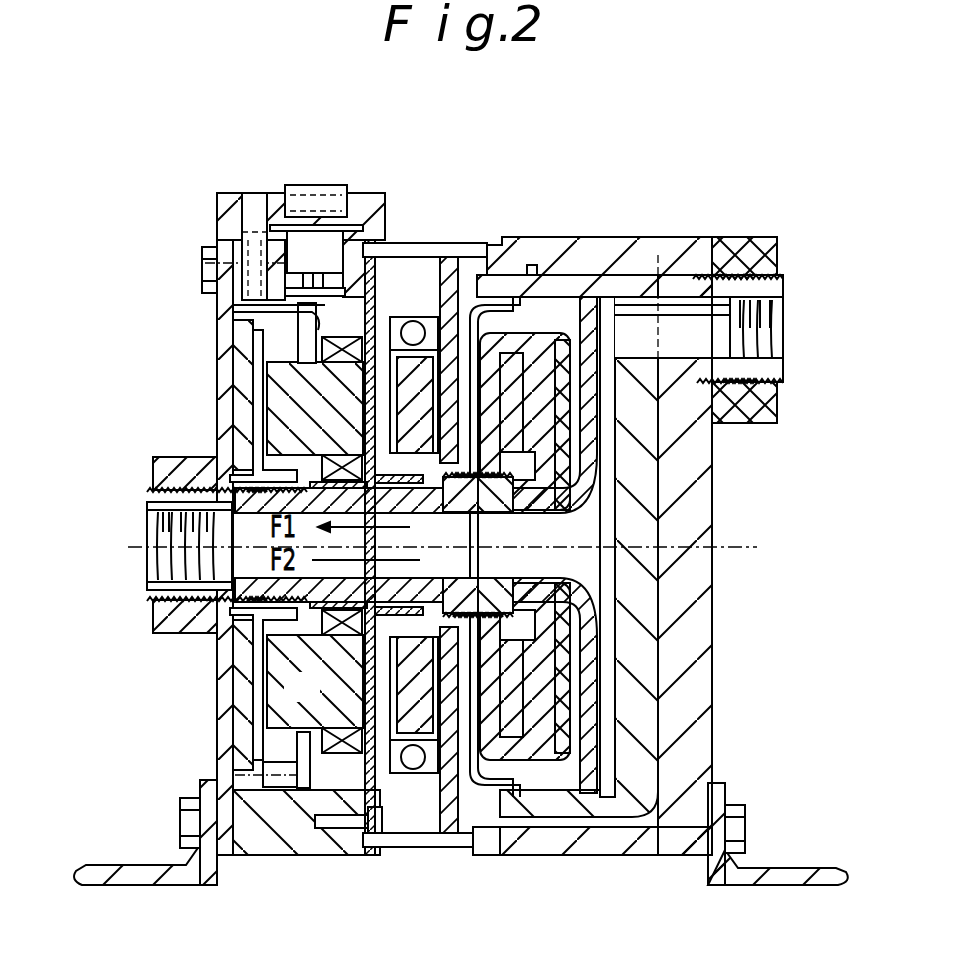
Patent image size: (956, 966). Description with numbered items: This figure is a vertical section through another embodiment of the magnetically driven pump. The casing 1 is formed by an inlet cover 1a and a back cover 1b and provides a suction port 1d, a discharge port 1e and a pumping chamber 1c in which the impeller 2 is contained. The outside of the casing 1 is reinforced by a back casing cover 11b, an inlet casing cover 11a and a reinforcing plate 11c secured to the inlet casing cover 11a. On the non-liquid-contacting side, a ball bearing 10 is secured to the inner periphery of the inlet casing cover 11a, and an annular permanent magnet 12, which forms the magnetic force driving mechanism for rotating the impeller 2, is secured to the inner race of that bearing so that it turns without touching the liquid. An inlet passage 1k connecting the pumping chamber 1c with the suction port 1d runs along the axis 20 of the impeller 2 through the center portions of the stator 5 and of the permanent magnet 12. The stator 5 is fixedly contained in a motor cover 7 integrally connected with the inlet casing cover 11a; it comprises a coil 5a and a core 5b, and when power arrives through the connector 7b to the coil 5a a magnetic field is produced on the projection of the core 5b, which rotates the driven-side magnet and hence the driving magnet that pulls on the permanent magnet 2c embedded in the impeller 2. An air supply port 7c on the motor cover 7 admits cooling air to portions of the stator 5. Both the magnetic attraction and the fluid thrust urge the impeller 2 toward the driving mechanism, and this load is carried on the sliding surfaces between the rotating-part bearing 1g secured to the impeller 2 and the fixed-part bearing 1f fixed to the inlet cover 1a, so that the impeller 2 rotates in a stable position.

The casing 1 is at (522, 238).
The inlet cover 1a is at (535, 298).
The back cover 1b is at (608, 282).
The pumping chamber 1c is at (612, 520).
The suction port 1d is at (147, 550).
The discharge port 1e is at (787, 343).
The fixed-part bearing 1f is at (460, 497).
The rotating-part bearing 1g is at (497, 497).
The inlet passage 1k is at (235, 600).
The impeller 2 is at (537, 745).
The permanent magnet 2c is at (517, 745).
The stator 5 is at (282, 790).
The coil 5a is at (255, 575).
The core 5b is at (316, 699).
The motor cover 7 is at (258, 855).
The connector 7b is at (348, 188).
The air supply port 7c is at (255, 193).
The ball bearing 10 is at (412, 770).
The inlet casing cover 11a is at (483, 850).
The back casing cover 11b is at (690, 672).
The reinforcing plate 11c is at (440, 838).
The annular permanent magnet 12 is at (358, 720).
The axis 20 is at (732, 547).